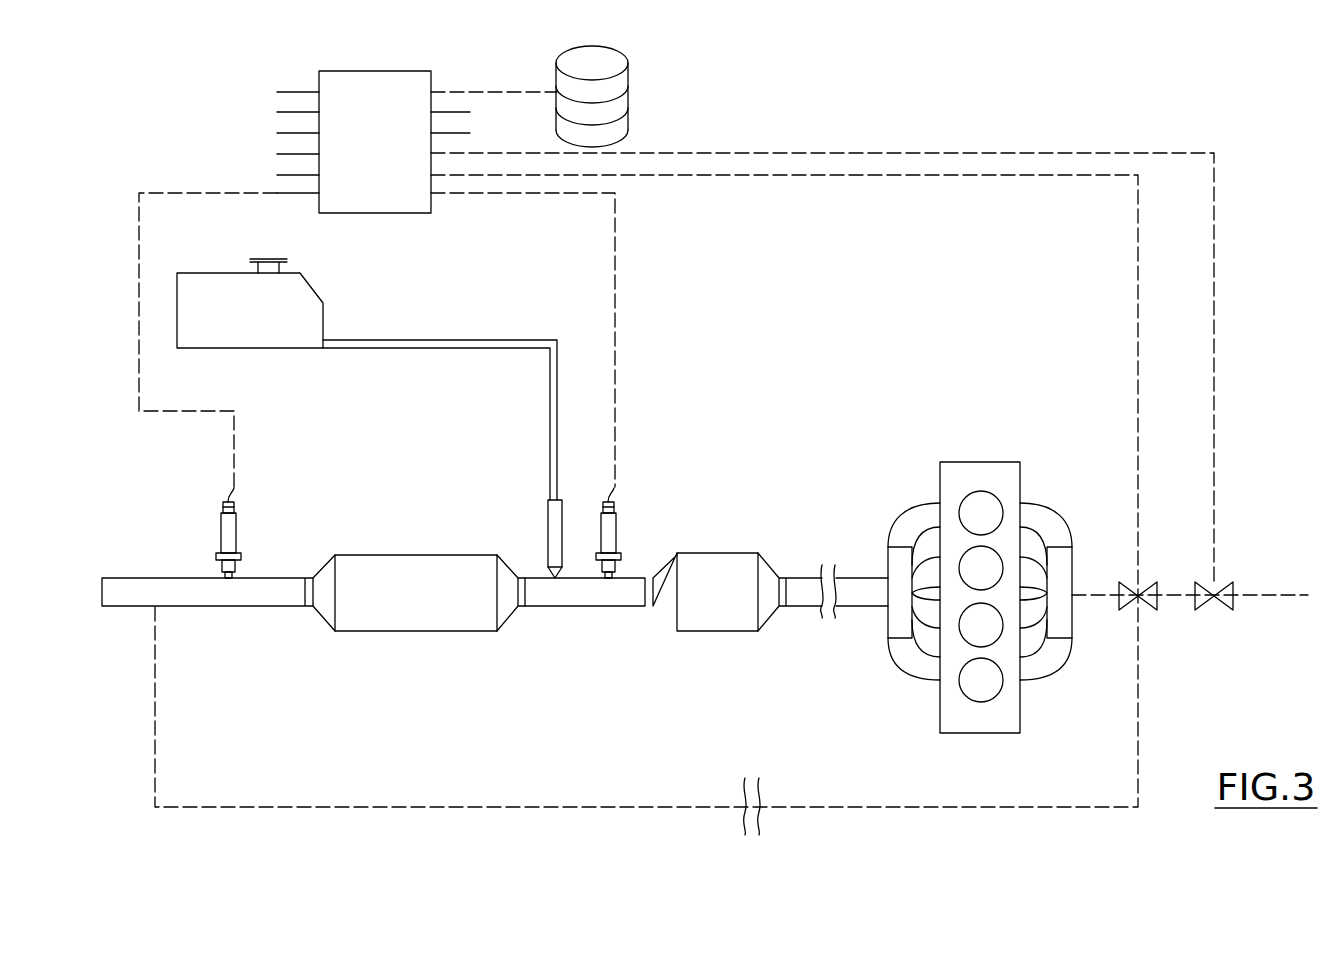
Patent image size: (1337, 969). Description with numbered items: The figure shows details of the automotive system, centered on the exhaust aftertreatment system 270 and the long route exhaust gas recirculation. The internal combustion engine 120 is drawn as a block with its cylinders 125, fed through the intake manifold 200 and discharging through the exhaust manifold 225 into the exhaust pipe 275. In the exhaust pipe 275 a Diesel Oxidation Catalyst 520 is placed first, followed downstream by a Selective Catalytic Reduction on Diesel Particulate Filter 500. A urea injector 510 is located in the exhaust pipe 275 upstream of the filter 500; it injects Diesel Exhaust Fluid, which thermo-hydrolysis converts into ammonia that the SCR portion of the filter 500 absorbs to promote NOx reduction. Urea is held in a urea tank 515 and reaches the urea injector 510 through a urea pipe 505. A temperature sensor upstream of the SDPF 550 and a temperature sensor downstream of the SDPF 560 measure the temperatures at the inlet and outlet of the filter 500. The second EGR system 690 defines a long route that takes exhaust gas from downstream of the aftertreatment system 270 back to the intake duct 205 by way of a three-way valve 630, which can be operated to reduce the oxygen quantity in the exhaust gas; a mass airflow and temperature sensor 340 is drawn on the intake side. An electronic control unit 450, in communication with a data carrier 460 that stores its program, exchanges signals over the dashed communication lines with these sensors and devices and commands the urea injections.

The engine 120 is at (890, 522).
The cylinder 125 is at (957, 508).
The intake manifold 200 is at (1072, 577).
The intake duct 205 is at (1270, 595).
The intake manifold 225 is at (888, 557).
The aftertreatment system 270 is at (491, 556).
The exhaust pipe 275 is at (133, 578).
The mass airflow and temperature sensor 340 is at (1214, 610).
The electronic control unit 450 is at (356, 155).
The data carrier 460 is at (628, 96).
The Selective Catalytic Reduction on Diesel Particulate Filter 500 is at (415, 630).
The urea pipe 505 is at (478, 340).
The urea injector 510 is at (548, 535).
The urea tank 515 is at (228, 324).
The Diesel Oxidation Catalyst 520 is at (720, 553).
The temperature sensor upstream of the SDPF 550 is at (619, 540).
The temperature sensor downstream of the SDPF 560 is at (240, 540).
The three-way valve 630 is at (1138, 610).
The second EGR system 690 is at (667, 790).